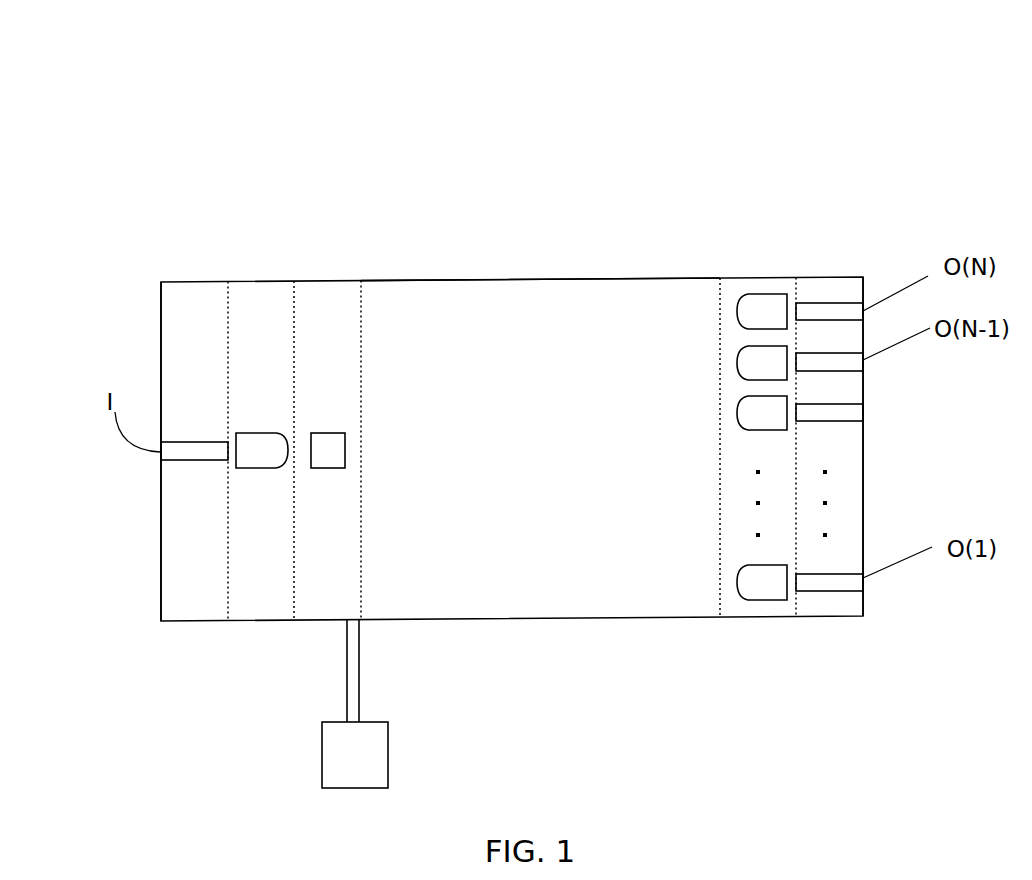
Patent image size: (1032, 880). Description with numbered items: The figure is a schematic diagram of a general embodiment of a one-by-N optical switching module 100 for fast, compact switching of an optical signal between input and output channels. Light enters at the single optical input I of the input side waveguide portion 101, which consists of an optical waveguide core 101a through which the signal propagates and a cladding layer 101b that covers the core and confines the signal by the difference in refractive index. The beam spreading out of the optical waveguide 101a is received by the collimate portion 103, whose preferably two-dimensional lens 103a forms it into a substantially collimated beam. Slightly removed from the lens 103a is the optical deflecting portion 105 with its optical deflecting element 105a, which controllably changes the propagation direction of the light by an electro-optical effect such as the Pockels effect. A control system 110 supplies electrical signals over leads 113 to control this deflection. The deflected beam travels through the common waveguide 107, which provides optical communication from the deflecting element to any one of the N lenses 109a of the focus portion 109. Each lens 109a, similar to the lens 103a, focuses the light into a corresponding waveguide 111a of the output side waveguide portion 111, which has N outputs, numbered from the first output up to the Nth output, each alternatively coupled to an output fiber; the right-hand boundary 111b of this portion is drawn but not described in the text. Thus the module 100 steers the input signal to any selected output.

The optical switching module 100 is at (163, 112).
The input side waveguide portion 101 is at (192, 265).
The optical waveguide 101a is at (177, 461).
The cladding layer 101b is at (162, 535).
The collimate portion 103 is at (258, 265).
The lens 103a is at (261, 468).
The optical deflecting portion 105 is at (325, 265).
The optical deflecting element 105a is at (331, 468).
The common waveguide 107 is at (518, 262).
The focus portion 109 is at (758, 258).
The lens 109a is at (750, 293).
The control system 110 is at (355, 755).
The output side waveguide portion 111 is at (825, 258).
The waveguide 111a is at (843, 303).
The output facet 111b is at (844, 277).
The electrical leads 113 is at (372, 678).